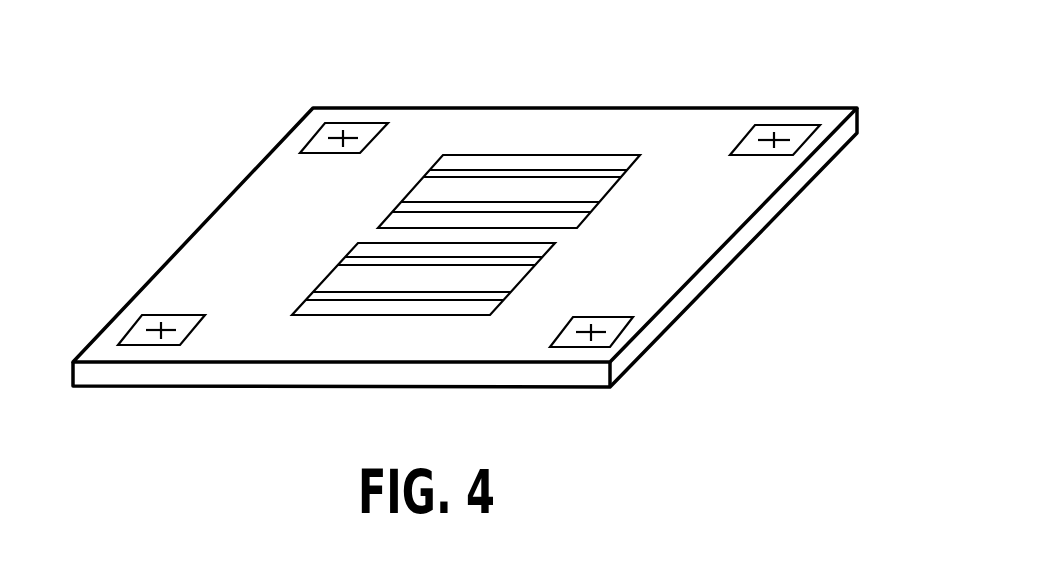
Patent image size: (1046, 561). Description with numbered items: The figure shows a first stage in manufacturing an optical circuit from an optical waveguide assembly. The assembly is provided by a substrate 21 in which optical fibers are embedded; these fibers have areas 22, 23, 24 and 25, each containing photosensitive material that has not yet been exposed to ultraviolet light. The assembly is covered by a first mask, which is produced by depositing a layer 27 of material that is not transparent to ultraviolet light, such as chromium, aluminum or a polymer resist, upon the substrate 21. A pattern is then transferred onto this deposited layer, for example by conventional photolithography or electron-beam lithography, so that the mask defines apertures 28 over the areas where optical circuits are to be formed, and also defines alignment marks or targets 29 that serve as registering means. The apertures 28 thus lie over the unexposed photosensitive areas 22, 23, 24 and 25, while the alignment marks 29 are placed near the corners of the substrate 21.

The substrate 21 is at (798, 183).
The area of embedded optical fiber 22 is at (476, 171).
The area of embedded optical fiber 23 is at (520, 207).
The area of embedded optical fiber 24 is at (367, 267).
The area of embedded optical fiber 25 is at (392, 295).
The layer 27 is at (693, 133).
The apertures 28 is at (583, 160).
The alignment marks 29 is at (327, 128).